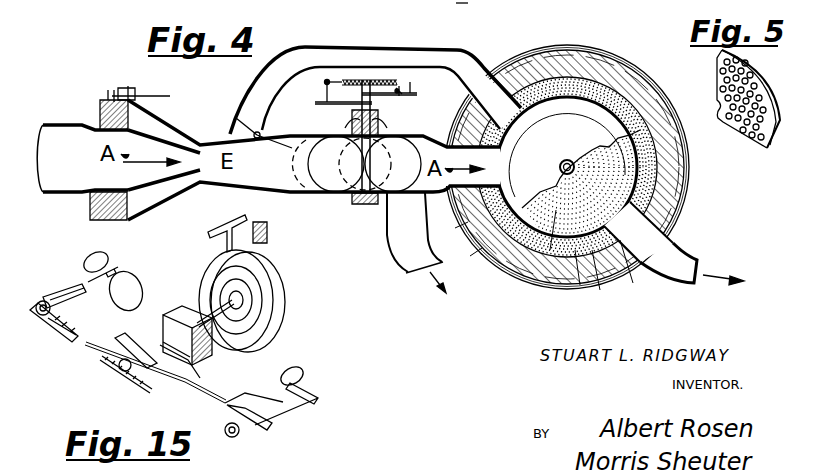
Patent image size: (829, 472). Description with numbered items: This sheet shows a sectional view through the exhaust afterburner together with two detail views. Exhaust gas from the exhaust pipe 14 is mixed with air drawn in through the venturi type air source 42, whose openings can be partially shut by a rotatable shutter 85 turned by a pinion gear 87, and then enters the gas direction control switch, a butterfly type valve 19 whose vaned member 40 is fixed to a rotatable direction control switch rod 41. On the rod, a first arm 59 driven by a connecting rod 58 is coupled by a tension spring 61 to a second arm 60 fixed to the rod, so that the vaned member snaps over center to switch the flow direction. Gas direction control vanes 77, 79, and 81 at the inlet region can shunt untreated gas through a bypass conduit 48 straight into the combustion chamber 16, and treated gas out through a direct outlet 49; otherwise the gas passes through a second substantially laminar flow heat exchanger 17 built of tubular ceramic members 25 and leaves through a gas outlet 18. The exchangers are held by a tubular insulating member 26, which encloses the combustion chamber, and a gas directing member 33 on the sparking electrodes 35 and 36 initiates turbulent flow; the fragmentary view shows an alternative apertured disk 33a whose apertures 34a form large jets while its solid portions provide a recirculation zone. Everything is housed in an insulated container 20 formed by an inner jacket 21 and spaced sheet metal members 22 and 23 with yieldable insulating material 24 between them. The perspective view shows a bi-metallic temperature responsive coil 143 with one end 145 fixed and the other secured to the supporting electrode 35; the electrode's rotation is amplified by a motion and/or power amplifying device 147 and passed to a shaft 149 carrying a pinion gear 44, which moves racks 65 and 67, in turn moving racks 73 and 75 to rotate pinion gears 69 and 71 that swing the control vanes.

In FIG. 4, the exhaust pipe 14 is at (78, 110).
In FIG. 4, the combustion chamber 16 is at (576, 268).
In FIG. 4, the second substantially laminar flow heat exchanger 17 is at (649, 305).
In FIG. 4, the gas outlet 18 is at (388, 238).
In FIG. 4, the butterfly type valve 19 is at (352, 200).
In FIG. 4, the insulated container 20 is at (464, 231).
In FIG. 4, the inner jacket 21 is at (481, 254).
In FIG. 4, the sheet metal container member 22 is at (650, 200).
In FIG. 4, the sheet metal container member 23 is at (689, 177).
In FIG. 4, the yieldable insulating material 24 is at (672, 148).
In FIG. 4, the tubular ceramic members 25 is at (605, 280).
In FIG. 4, the tubular insulating member 26 is at (477, 7).
In FIG. 4, the gas directing member 33 is at (557, 127).
In FIG. 5, the apertured disk 33a is at (756, 70).
In FIG. 5, the apertures 34a is at (773, 143).
In FIG. 15, the sparking electrode 35 is at (211, 334).
In FIG. 4, the sparking electrode 36 is at (562, 163).
In FIG. 4, the vaned member 40 is at (300, 194).
In FIG. 4, the direction control switch rod 41 is at (378, 141).
In FIG. 4, the venturi type air source 42 is at (172, 124).
In FIG. 15, the pinion gear 44 is at (162, 384).
In FIG. 4, the bypass conduit 48 is at (400, 47).
In FIG. 4, the direct outlet 49 is at (704, 275).
In FIG. 4, the connecting rod 58 is at (403, 91).
In FIG. 4, the first arm 59 is at (417, 96).
In FIG. 4, the second arm 60 is at (334, 104).
In FIG. 4, the tension spring 61 is at (327, 82).
In FIG. 15, the rack 65 is at (150, 329).
In FIG. 15, the rack 67 is at (108, 376).
In FIG. 15, the pinion gear 69 is at (240, 440).
In FIG. 15, the pinion gear 71 is at (58, 296).
In FIG. 15, the rack 73 is at (268, 425).
In FIG. 15, the rack 75 is at (50, 330).
In FIG. 4, the gas direction control vane 77 is at (668, 246).
In FIG. 15, the gas direction control vane 77 is at (293, 377).
In FIG. 4, the gas direction control vane 79 is at (254, 134).
In FIG. 15, the gas direction control vane 79 is at (98, 264).
In FIG. 4, the gas direction control vane 81 is at (268, 144).
In FIG. 15, the gas direction control vane 81 is at (130, 290).
In FIG. 4, the rotatable shutter 85 is at (121, 160).
In FIG. 4, the pinion gear 87 is at (128, 92).
In FIG. 15, the bi-metallic temperature responsive coil 143 is at (280, 298).
In FIG. 15, the coil end 145 is at (226, 240).
In FIG. 15, the motion and/or power amplifying device 147 is at (200, 318).
In FIG. 15, the shaft 149 is at (186, 368).